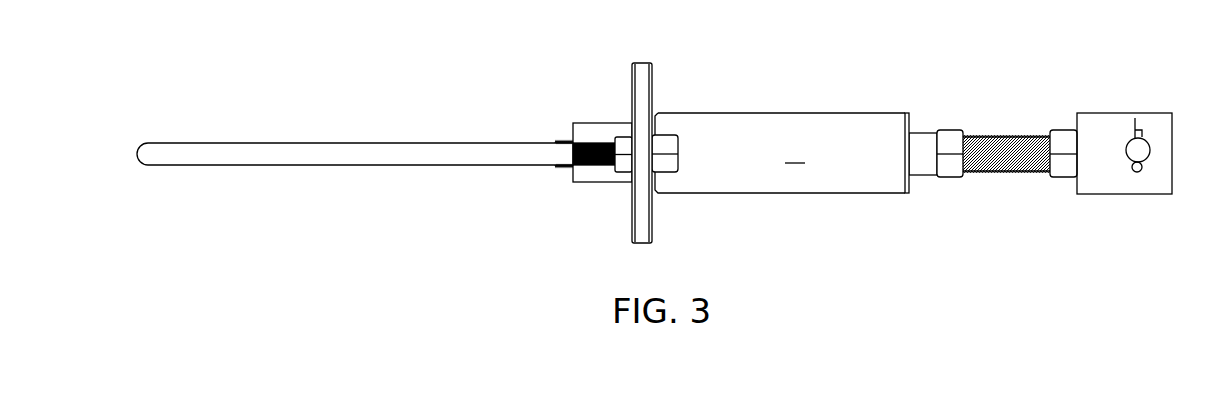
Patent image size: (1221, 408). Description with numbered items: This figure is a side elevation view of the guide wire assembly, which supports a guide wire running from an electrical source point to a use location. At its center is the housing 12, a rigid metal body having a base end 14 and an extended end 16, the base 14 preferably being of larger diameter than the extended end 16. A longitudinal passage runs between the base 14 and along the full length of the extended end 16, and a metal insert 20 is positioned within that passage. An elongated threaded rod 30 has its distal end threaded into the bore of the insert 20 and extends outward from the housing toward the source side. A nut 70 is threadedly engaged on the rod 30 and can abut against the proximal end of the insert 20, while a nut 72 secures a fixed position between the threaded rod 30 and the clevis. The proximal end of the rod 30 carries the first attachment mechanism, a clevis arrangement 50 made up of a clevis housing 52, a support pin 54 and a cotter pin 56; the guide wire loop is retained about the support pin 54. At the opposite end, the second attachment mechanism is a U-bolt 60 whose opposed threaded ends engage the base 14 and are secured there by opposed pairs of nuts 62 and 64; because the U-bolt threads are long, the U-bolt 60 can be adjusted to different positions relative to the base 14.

The housing 12 is at (808, 216).
The base end 14 is at (641, 246).
The extended end 16 is at (796, 154).
The metal insert 20 is at (563, 112).
The threaded rod 30 is at (1010, 122).
The clevis arrangement 50 is at (1143, 150).
The clevis housing 52 is at (1098, 188).
The support pin 54 is at (1143, 148).
The cotter pin 56 is at (1131, 130).
The U-bolt 60 is at (332, 134).
The nuts 62 is at (663, 140).
The nuts 64 is at (624, 170).
The nut 70 is at (950, 170).
The nut 72 is at (1060, 170).